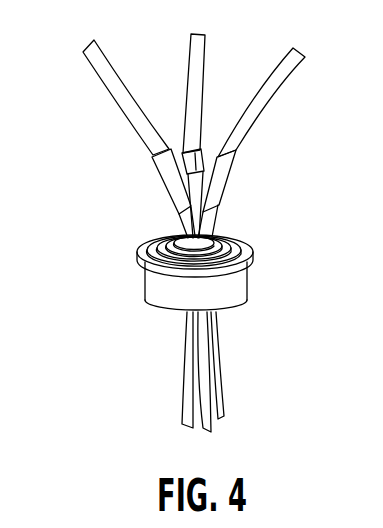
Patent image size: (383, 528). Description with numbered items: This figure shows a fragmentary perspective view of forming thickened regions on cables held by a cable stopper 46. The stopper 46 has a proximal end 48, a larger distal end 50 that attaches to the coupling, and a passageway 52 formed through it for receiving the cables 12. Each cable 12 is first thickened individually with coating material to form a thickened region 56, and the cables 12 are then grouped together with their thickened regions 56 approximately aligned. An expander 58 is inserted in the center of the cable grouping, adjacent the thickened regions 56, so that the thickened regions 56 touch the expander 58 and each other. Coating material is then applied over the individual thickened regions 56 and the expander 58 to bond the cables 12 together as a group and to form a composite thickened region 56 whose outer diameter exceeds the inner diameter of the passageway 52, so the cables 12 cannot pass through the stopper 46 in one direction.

The cable 12 is at (203, 58).
The cable stopper 46 is at (153, 288).
The proximal end 48 is at (253, 250).
The distal end 50 is at (233, 307).
The passageway 52 is at (173, 232).
The thickened region 56 is at (184, 151).
The expander 58 is at (203, 190).